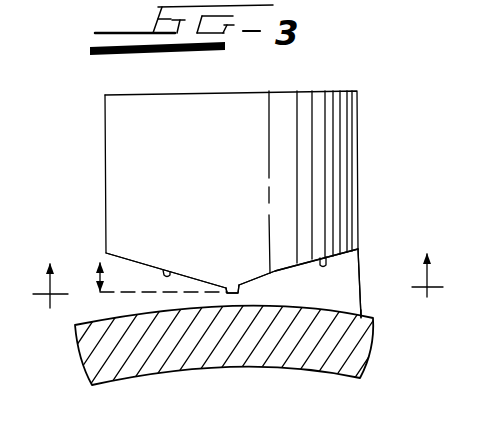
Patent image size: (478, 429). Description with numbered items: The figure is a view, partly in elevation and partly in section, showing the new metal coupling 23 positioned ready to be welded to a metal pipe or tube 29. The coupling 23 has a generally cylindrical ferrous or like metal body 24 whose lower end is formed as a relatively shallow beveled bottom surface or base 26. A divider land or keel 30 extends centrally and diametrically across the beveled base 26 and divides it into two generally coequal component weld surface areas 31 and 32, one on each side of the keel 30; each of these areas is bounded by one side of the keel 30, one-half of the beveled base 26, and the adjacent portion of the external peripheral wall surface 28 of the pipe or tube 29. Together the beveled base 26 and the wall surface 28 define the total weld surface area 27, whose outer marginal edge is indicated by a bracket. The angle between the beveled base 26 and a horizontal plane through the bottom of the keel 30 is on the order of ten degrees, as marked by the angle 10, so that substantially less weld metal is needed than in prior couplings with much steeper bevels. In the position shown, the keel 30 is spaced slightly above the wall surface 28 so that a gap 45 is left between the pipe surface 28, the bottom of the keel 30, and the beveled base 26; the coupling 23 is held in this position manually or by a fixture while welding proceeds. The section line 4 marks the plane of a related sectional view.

The section line 4- 4 is at (238, 286).
The ten degree angle 10 is at (87, 275).
The metal coupling 23 is at (359, 147).
The generally cylindrical body 24 is at (328, 127).
The beveled bottom surface 26 is at (322, 254).
The total weld surface area 27 is at (364, 268).
The external peripheral wall surface 28 is at (364, 308).
The metal pipe or tube 29 is at (357, 347).
The divider land or keel 30 is at (231, 284).
The first component weld surface area 31 is at (135, 287).
The second component weld surface area 32 is at (296, 294).
The gap 45 is at (223, 302).